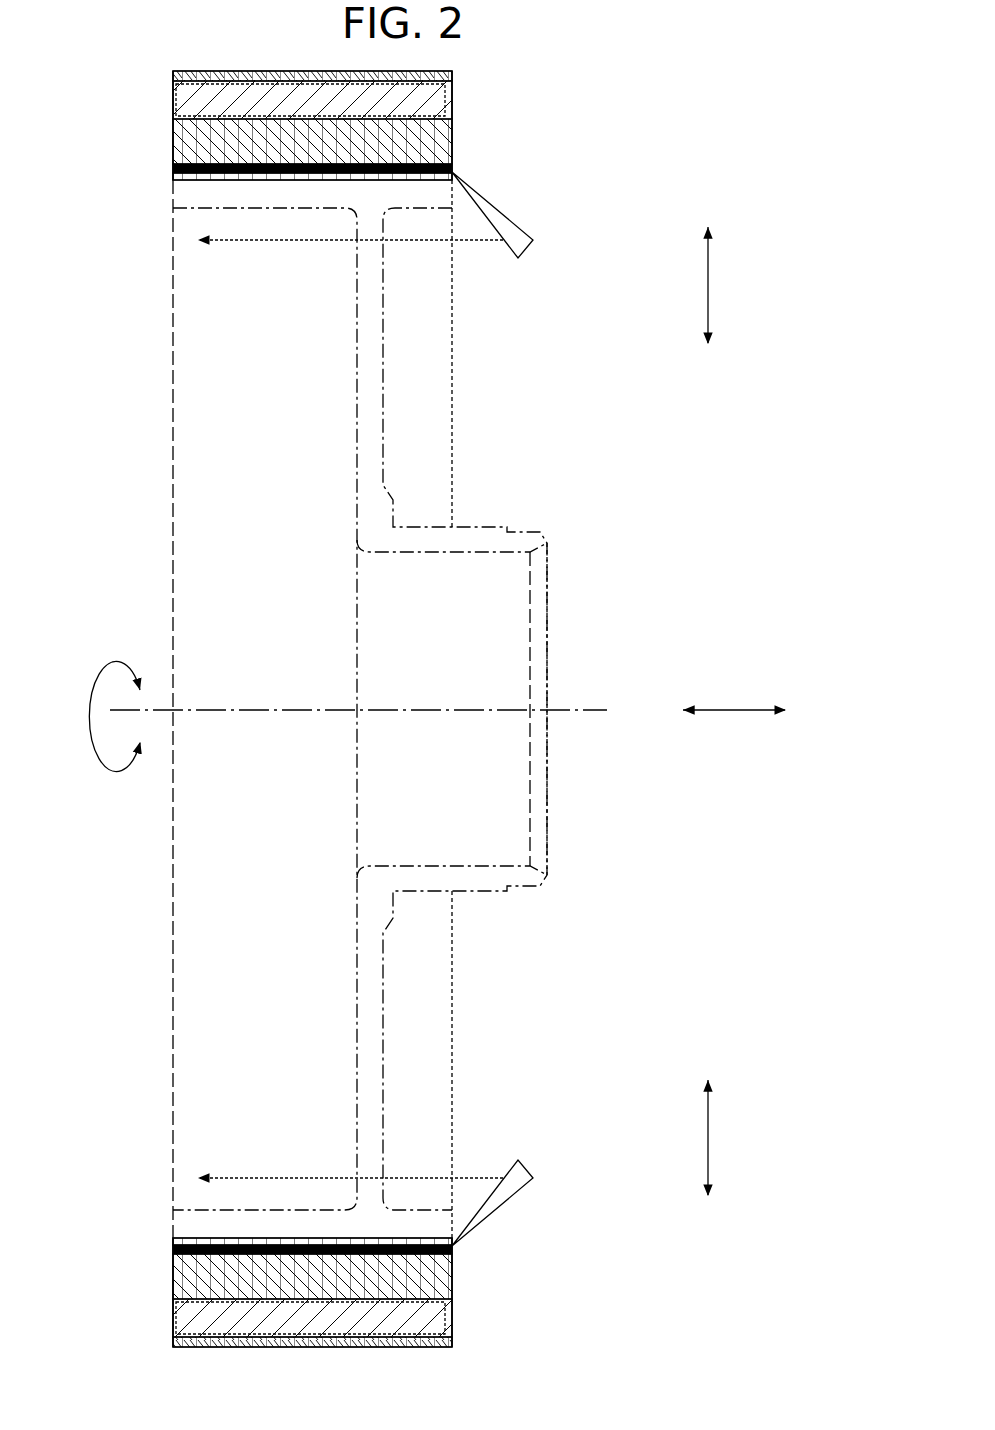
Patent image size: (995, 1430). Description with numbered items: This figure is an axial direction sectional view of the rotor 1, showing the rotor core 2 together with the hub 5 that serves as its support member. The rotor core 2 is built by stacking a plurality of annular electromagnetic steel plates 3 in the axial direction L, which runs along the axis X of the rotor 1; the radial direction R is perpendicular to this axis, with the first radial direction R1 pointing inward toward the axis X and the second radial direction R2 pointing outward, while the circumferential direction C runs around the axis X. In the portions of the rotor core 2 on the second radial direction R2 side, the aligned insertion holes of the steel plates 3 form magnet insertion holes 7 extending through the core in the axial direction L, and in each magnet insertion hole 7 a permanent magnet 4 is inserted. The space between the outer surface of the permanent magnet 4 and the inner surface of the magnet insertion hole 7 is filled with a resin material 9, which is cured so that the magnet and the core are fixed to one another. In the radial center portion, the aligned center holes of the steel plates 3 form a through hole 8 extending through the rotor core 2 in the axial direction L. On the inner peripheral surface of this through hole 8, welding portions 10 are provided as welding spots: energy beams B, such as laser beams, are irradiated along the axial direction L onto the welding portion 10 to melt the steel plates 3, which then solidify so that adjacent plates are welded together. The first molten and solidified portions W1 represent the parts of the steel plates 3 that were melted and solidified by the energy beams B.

The rotor 1 is at (667, 88).
The rotor core 2 is at (170, 153).
The electromagnetic steel plate 3 is at (435, 73).
The permanent magnet 4 is at (173, 96).
The hub 5 is at (375, 392).
The magnet insertion hole 7 is at (190, 123).
The through hole 8 is at (207, 1240).
The resin material 9 is at (452, 98).
The welding portion 10 is at (313, 181).
The energy beam B is at (497, 220).
The first molten and solidified portion W1 is at (200, 180).
The circumferential direction C is at (100, 717).
The axis X is at (619, 710).
The axial direction L is at (734, 695).
The radial direction R is at (724, 711).
The first radial direction R1 is at (707, 711).
The second radial direction R2 is at (707, 710).